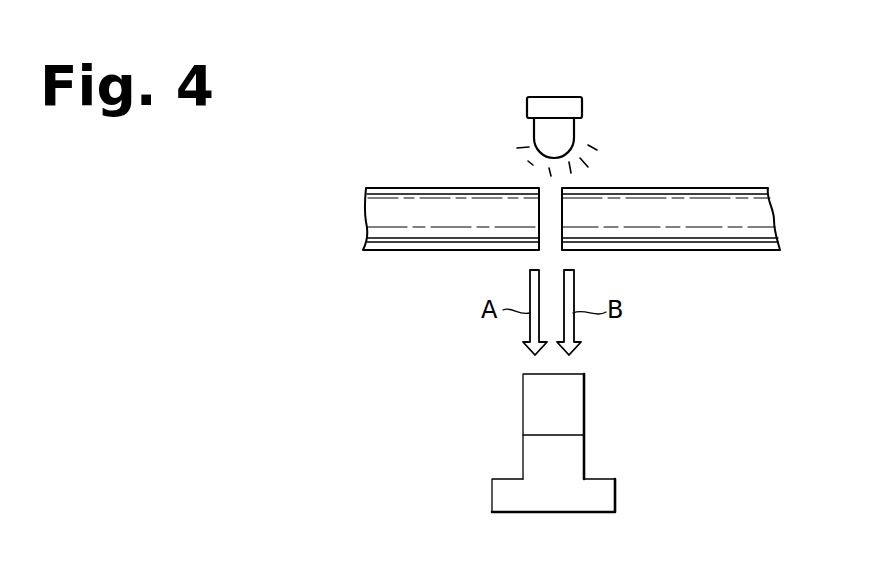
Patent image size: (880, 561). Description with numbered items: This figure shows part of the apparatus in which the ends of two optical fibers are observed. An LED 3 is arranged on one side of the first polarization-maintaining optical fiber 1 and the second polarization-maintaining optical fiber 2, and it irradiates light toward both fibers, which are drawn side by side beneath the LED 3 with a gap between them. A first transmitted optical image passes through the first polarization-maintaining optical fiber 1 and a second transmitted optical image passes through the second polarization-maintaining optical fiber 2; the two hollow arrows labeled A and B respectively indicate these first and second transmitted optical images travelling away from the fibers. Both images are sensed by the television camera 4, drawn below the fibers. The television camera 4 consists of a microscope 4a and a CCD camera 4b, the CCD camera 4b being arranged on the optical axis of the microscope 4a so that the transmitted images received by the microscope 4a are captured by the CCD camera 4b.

The first polarization-maintaining optical fiber 1 is at (430, 256).
The second polarization-maintaining optical fiber 2 is at (704, 256).
The LED 3 is at (592, 116).
The television camera 4 is at (614, 447).
The microscope 4a is at (570, 405).
The CCD camera 4b is at (596, 500).